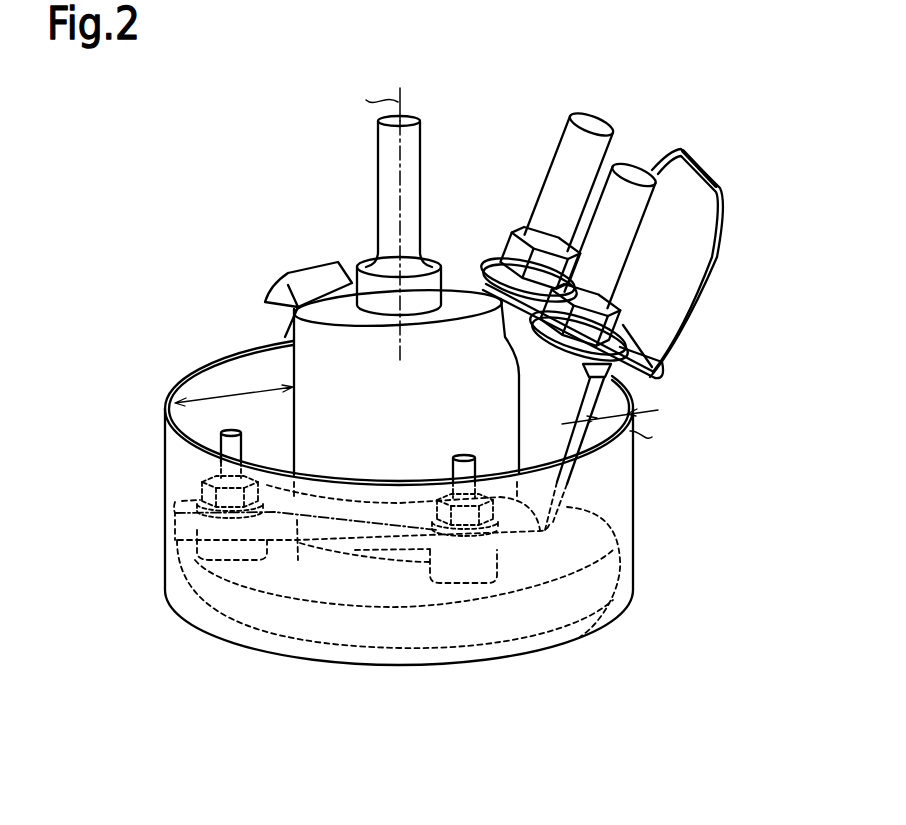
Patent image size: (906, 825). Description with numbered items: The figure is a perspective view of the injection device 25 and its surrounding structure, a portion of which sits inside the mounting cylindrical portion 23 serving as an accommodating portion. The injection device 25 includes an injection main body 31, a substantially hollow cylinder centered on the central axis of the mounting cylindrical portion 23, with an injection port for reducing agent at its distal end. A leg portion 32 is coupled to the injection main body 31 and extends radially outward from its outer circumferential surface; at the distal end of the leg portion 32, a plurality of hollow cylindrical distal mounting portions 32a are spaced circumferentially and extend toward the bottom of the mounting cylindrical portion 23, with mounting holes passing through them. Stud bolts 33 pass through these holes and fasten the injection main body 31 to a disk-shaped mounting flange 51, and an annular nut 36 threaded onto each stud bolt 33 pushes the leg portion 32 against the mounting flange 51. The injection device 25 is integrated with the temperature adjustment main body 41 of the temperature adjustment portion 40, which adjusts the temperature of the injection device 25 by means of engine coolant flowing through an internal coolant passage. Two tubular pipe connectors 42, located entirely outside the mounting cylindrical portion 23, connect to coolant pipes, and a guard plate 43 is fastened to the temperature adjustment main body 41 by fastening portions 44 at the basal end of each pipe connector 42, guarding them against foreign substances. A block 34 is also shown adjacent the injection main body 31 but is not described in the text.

The mounting cylindrical portion 23 is at (633, 567).
The injection device 25 is at (270, 118).
The injection main body 31 is at (380, 172).
The leg portion 32 is at (393, 565).
The distal mounting portion 32a is at (190, 530).
The stud bolt 33 is at (222, 444).
The block 34 is at (310, 265).
The nut 36 is at (258, 487).
The temperature adjustment portion 40 is at (705, 378).
The temperature adjustment main body 41 is at (632, 380).
The pipe connector 42 is at (557, 145).
The guard plate 43 is at (720, 223).
The fastening portion 44 is at (503, 250).
The mounting flange 51 is at (567, 507).